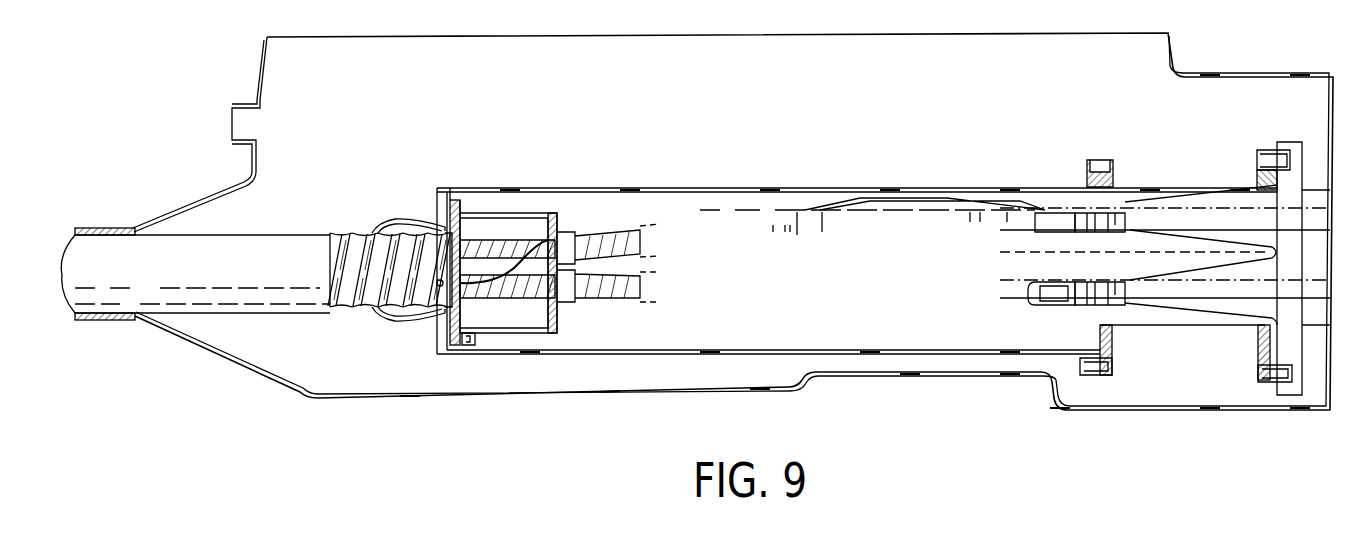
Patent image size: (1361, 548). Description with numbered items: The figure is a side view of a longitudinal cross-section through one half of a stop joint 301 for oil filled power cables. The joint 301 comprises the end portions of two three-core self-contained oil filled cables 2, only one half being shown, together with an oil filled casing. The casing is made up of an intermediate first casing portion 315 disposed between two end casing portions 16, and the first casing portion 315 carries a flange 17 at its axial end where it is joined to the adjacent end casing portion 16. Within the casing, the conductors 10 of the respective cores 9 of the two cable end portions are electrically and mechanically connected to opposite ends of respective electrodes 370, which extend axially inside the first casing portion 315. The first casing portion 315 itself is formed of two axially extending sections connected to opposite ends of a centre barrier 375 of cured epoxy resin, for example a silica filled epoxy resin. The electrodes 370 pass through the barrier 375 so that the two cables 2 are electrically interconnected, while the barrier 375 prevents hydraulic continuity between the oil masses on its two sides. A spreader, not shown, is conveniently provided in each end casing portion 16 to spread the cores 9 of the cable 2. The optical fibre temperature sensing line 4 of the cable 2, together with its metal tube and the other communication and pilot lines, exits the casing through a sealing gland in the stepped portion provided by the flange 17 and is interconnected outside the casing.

The three-core self contained oil filled electric cable 2 is at (360, 297).
The temperature sensing optical fibre line 4 is at (583, 225).
The cable core 9 is at (630, 242).
The conductor 10 is at (1049, 220).
The end casing portion 16 is at (652, 354).
The flange 17 is at (1113, 345).
The stop joint 301 is at (706, 182).
The first casing portion 315 is at (1227, 154).
The electrode 370 is at (1120, 218).
The centre barrier 375 is at (1290, 352).